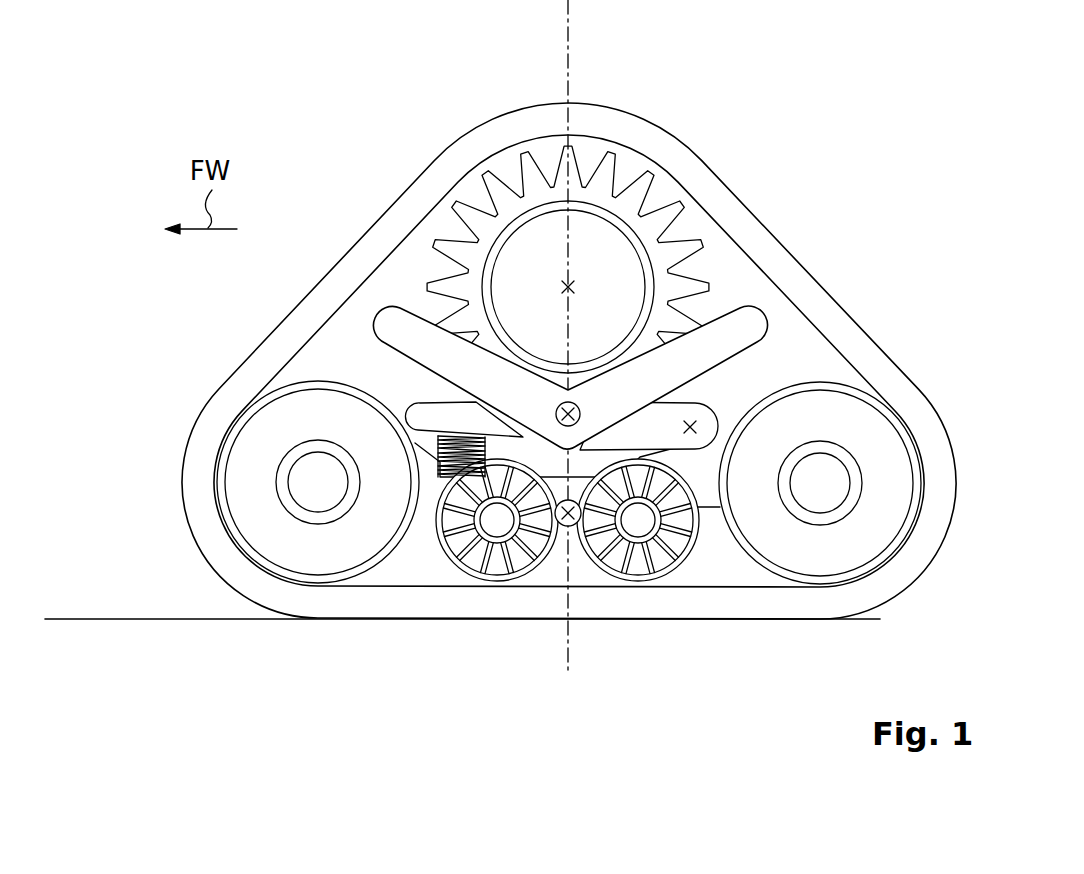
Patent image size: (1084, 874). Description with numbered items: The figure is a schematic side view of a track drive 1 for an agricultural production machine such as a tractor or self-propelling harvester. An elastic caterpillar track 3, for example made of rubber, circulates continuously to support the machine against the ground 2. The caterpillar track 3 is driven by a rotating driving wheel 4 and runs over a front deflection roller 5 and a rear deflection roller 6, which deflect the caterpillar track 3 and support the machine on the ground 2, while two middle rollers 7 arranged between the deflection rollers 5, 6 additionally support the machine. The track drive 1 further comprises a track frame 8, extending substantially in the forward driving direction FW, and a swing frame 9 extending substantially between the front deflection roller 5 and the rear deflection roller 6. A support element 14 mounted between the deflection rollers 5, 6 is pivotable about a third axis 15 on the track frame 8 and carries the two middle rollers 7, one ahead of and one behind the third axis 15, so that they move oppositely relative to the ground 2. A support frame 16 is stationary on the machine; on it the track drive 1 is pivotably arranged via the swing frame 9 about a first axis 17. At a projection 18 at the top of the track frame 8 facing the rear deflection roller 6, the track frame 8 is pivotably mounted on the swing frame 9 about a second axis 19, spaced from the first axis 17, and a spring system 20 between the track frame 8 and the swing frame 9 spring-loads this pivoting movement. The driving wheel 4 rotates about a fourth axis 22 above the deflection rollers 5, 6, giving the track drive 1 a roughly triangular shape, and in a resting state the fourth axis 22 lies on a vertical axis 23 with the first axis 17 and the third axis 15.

The track drive 1 is at (764, 126).
The ground 2 is at (100, 618).
The caterpillar track 3 is at (752, 232).
The driving wheel 4 is at (470, 190).
The front deflection roller 5 is at (315, 553).
The rear deflection roller 6 is at (827, 553).
The middle rollers 7 is at (497, 572).
The track frame 8 is at (705, 488).
The swing frame 9 is at (443, 418).
The support element 14 is at (563, 530).
The third axis 15 is at (575, 514).
The support frame 16 is at (752, 325).
The first axis 17 is at (560, 422).
The projection 18 is at (715, 445).
The second axis 19 is at (697, 427).
The spring system 20 is at (430, 462).
The fourth axis 22 is at (574, 285).
The vertical axis 23 is at (566, 33).